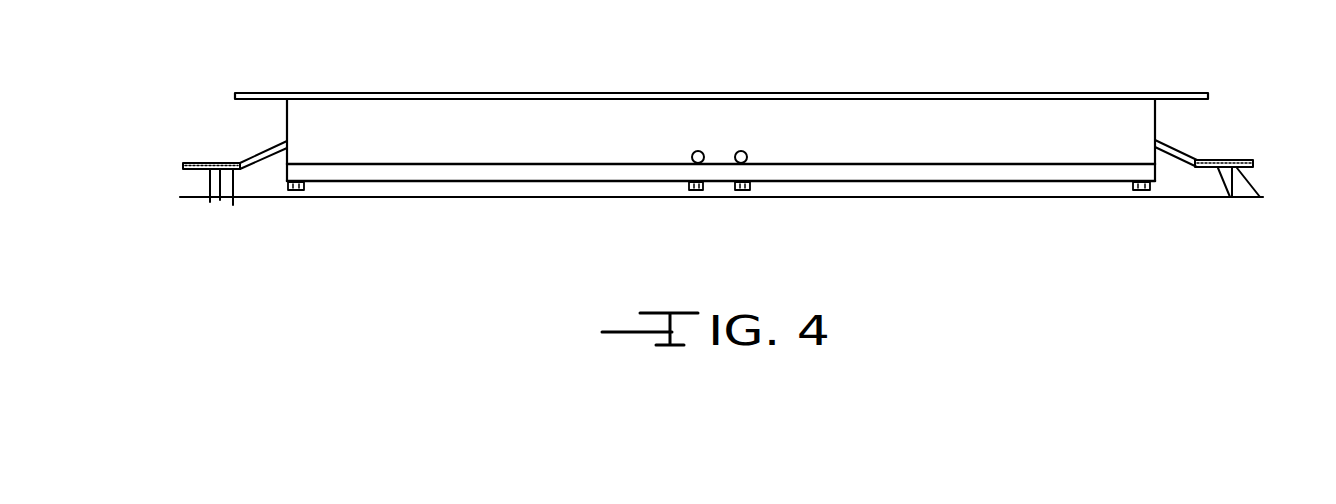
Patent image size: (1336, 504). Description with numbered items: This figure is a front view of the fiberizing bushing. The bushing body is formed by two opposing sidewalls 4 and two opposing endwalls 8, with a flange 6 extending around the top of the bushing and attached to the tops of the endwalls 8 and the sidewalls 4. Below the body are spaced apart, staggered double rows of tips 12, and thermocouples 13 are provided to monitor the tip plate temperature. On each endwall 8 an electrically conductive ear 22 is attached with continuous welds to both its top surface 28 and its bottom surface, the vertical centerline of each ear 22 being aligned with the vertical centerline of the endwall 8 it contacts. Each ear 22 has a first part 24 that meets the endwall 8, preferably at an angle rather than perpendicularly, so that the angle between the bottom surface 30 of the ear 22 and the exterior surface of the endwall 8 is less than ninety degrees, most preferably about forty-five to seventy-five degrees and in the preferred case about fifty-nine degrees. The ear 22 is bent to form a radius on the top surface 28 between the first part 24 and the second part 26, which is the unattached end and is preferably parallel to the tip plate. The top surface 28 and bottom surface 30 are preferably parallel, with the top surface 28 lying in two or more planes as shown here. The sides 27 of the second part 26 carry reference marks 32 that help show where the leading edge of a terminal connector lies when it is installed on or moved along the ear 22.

The sidewall 4 is at (992, 122).
The flange 6 is at (267, 93).
The endwall 8 is at (287, 120).
The tips 12 is at (700, 190).
The thermocouples 13 is at (703, 153).
The ear 22 is at (1192, 178).
The first part 24 is at (1177, 152).
The second part 26 is at (1260, 197).
The sides 27 is at (197, 170).
The top surface 28 is at (212, 163).
The bottom surface 30 is at (233, 205).
The reference marks 32 is at (220, 200).